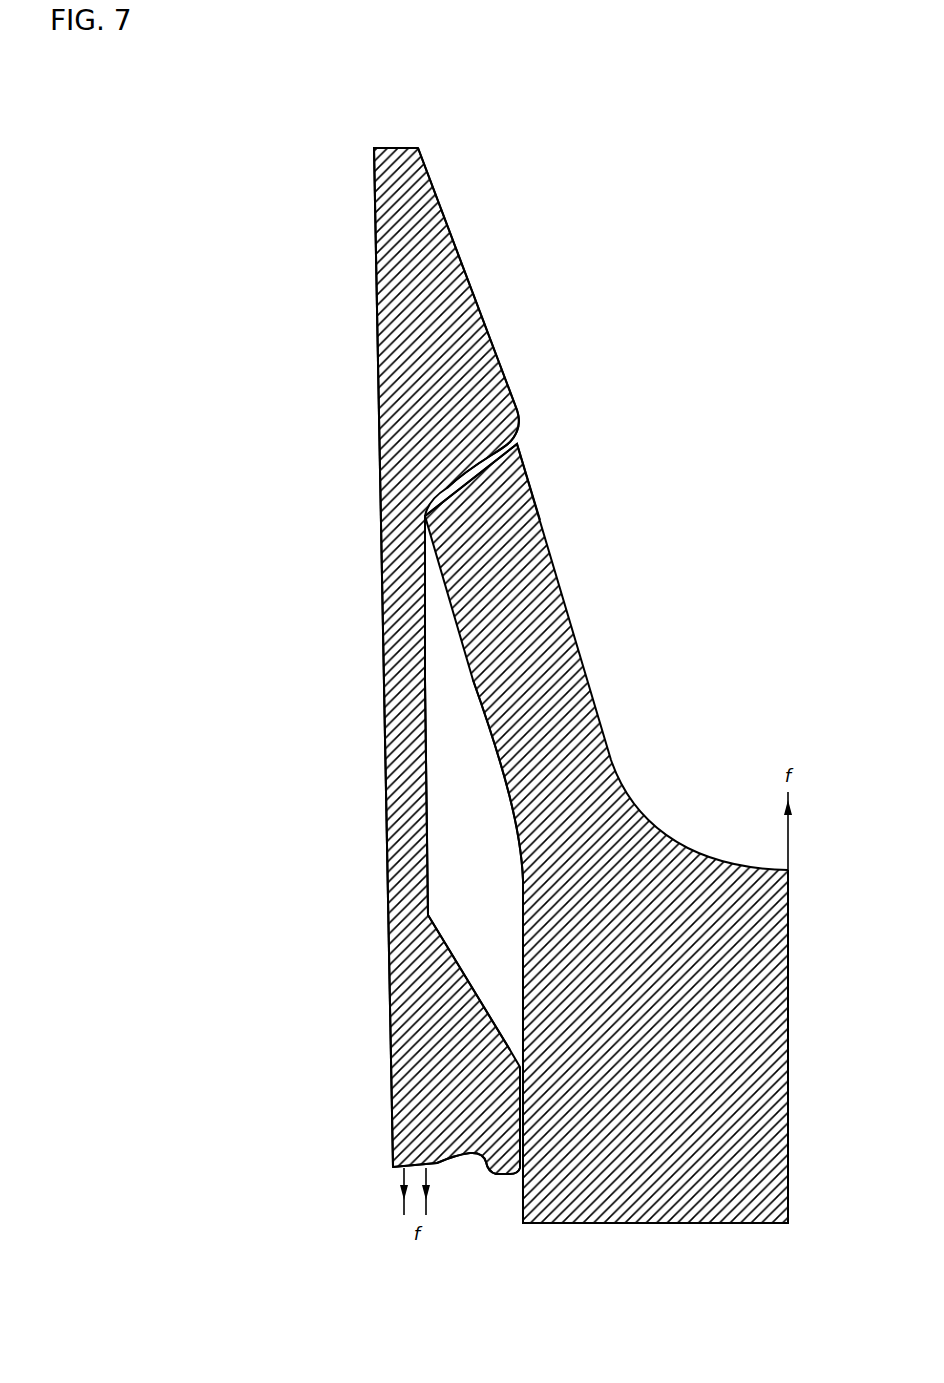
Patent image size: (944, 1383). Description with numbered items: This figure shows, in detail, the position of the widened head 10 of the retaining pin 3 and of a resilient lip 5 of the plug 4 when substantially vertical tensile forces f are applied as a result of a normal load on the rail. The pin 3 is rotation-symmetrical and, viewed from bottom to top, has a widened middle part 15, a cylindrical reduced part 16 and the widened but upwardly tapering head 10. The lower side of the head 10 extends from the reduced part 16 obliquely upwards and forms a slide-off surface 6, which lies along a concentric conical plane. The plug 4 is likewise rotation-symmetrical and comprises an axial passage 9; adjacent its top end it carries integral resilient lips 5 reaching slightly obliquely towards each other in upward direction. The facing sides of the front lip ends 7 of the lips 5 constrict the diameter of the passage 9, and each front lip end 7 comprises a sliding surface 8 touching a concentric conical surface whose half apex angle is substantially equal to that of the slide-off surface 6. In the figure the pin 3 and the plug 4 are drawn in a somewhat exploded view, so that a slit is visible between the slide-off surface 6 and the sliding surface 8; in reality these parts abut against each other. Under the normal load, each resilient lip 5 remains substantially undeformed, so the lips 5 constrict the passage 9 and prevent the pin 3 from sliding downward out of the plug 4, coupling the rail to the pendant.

The retaining pin 3 is at (448, 210).
The widened head 10 is at (477, 275).
The slide-off surface 6 is at (512, 440).
The sliding surface 8 is at (513, 441).
The front lip end 7 is at (520, 472).
The resilient lip 5 is at (615, 718).
The plug 4 is at (726, 1262).
The axial passage 9 is at (457, 892).
The reduced part 16 is at (318, 800).
The middle part 15 is at (487, 1172).